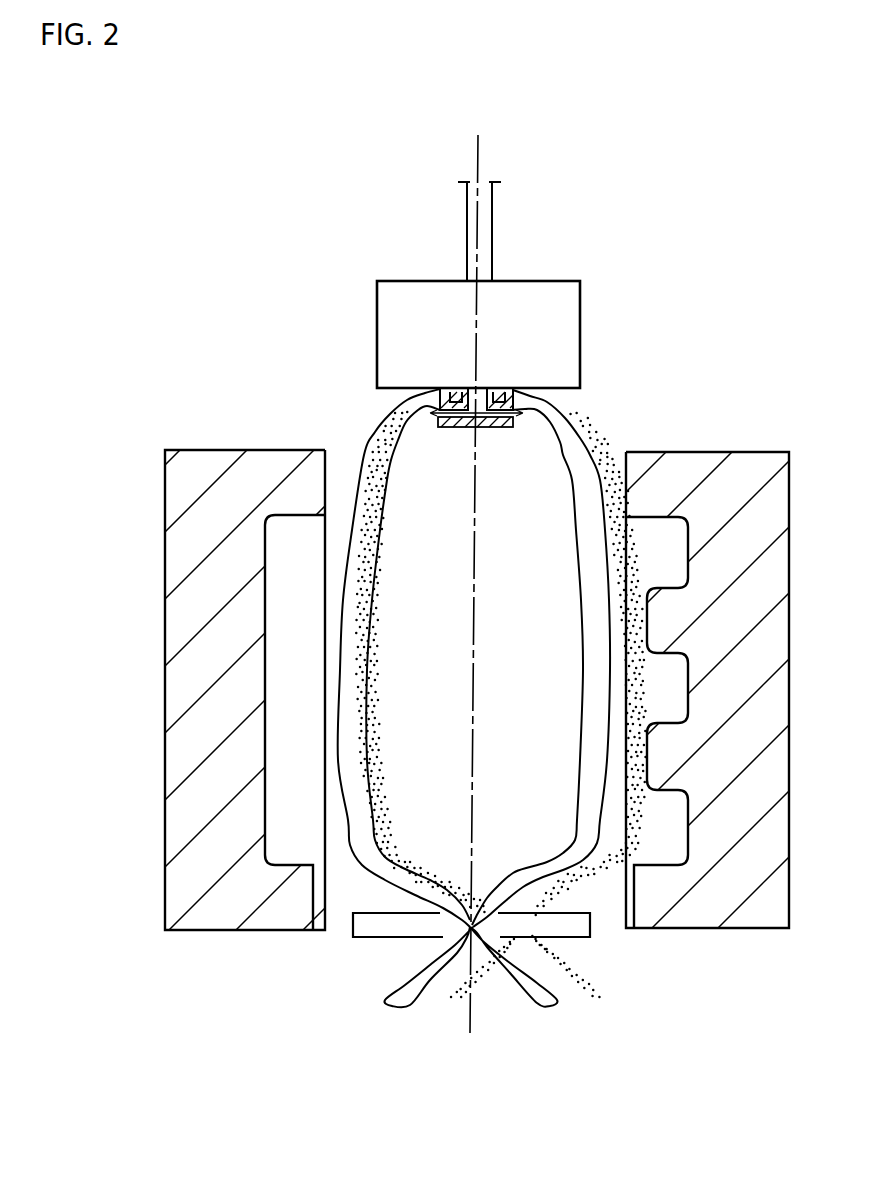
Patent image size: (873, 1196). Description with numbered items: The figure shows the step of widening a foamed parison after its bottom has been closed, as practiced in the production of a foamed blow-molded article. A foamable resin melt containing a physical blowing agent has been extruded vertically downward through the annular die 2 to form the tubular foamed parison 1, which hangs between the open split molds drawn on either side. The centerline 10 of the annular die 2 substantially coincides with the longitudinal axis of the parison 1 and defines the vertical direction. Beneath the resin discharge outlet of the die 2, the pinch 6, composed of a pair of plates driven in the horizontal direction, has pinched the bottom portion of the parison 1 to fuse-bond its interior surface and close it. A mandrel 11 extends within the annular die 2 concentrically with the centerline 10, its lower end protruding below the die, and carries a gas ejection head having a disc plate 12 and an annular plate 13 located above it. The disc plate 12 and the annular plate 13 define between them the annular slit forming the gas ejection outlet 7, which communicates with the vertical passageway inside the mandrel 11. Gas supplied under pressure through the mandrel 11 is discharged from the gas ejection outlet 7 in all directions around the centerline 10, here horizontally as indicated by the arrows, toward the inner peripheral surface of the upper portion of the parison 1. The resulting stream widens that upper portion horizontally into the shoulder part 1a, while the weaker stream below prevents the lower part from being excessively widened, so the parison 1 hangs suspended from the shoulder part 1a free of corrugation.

The foamed parison 1 is at (516, 681).
The shoulder part 1a is at (380, 427).
The annular die 2 is at (547, 281).
The pinch 6 is at (576, 933).
The gas ejection outlet 7 is at (443, 414).
The centerline 10 is at (477, 160).
The mandrel 11 is at (492, 228).
The disc plate 12 is at (490, 430).
The annular plate 13 is at (449, 388).